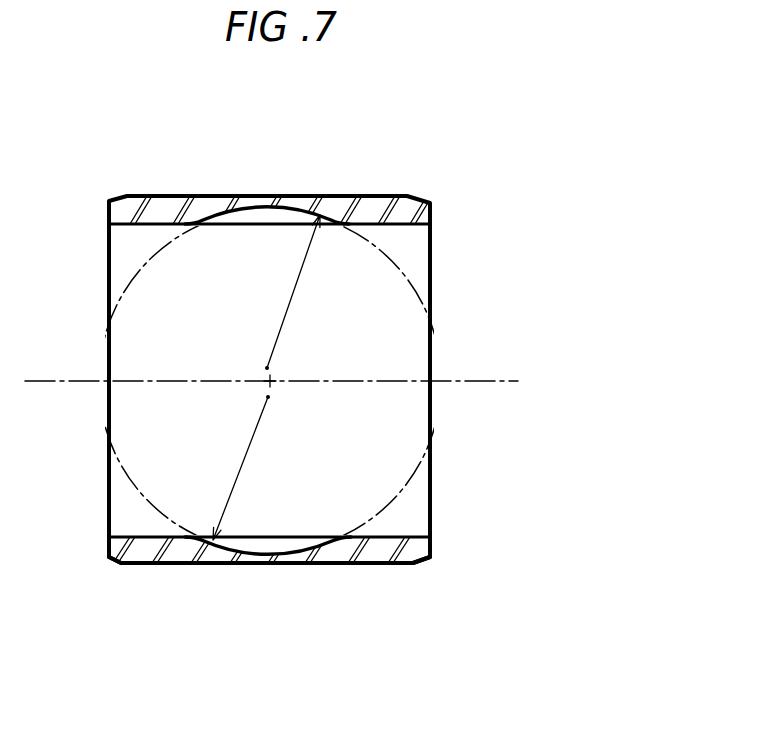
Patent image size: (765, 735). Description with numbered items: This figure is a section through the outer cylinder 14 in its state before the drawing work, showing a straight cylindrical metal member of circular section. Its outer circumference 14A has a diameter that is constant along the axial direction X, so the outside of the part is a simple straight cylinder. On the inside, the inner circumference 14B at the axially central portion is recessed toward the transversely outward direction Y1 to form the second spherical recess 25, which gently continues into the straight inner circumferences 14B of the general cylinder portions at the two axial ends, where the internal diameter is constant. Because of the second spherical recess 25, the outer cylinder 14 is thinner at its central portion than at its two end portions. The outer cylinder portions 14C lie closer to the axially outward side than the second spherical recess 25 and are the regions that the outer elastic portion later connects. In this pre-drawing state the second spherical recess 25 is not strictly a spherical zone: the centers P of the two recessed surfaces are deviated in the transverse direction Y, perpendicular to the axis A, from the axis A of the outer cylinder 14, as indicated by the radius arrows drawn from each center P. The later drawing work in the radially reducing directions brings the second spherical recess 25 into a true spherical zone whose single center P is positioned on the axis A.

The outer cylinder 14 is at (281, 123).
The outer circumference 14A is at (176, 196).
The inner circumference 14B is at (150, 535).
The outer cylinder portions 14C is at (168, 563).
The second spherical recess 25 is at (288, 556).
The center P is at (255, 368).
The axis A is at (483, 384).
The axial direction X is at (444, 157).
The transverse direction Y is at (519, 211).
The transversely outward direction Y1 is at (611, 214).